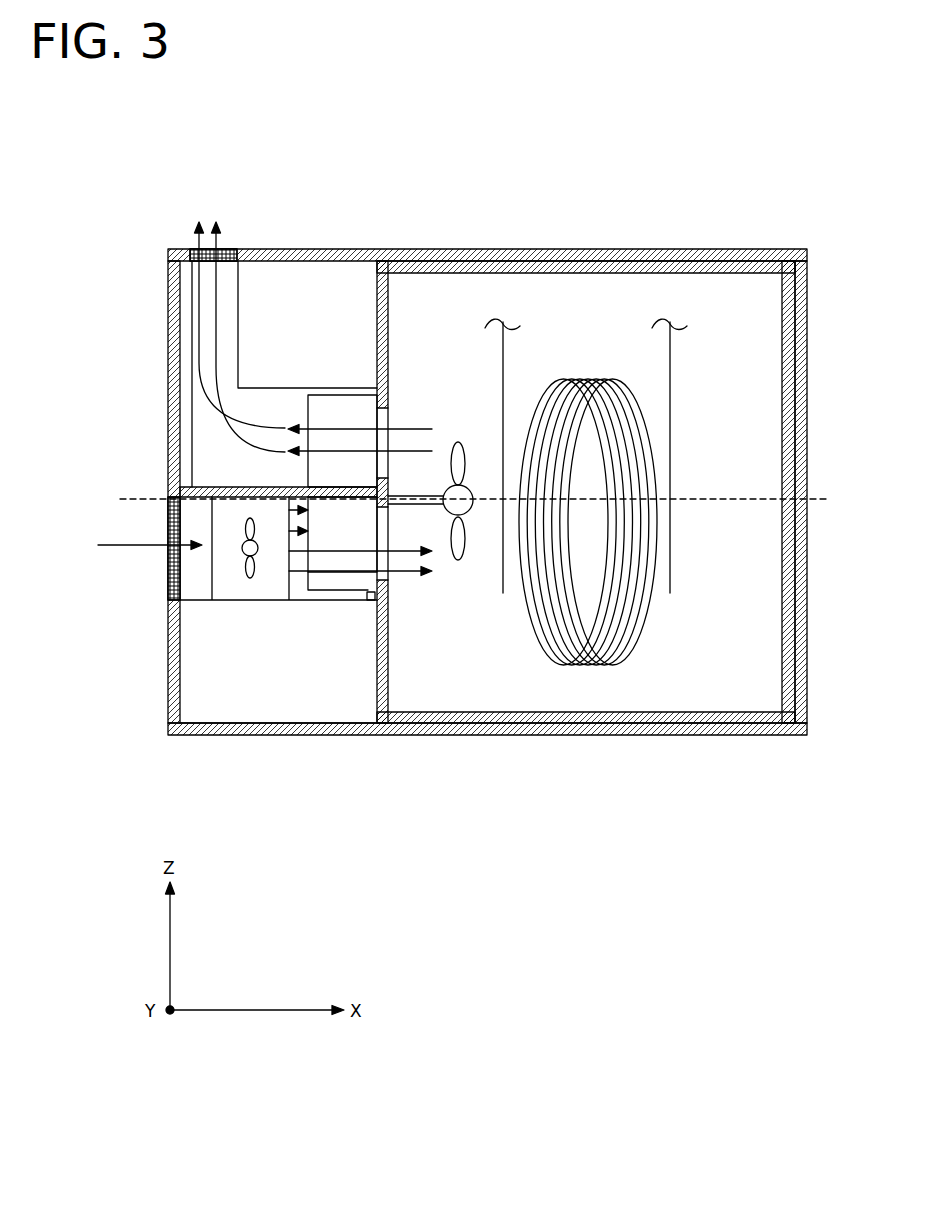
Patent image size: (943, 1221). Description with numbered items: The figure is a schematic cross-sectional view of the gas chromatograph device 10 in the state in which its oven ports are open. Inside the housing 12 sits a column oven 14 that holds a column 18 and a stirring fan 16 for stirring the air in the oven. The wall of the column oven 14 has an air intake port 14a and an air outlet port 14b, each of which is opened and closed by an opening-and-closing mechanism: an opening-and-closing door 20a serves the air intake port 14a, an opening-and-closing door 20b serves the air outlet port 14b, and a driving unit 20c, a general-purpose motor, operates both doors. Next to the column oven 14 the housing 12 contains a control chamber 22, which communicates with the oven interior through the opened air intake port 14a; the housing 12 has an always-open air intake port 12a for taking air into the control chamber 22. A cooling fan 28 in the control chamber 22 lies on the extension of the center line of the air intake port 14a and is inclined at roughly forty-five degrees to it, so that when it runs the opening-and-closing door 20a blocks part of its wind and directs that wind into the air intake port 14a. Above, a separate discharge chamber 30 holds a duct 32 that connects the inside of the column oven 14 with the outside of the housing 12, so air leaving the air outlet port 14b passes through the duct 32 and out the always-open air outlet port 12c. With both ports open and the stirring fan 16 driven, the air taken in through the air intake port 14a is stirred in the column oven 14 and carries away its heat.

The gas chromatograph device 10 is at (133, 155).
The housing 12 is at (524, 238).
The air intake port 12a is at (150, 532).
The air outlet port 12c is at (186, 231).
The column oven 14 is at (765, 252).
The air intake port 14a is at (402, 589).
The air outlet port 14b is at (404, 423).
The stirring fan 16 is at (477, 562).
The column 18 is at (692, 581).
The opening-and-closing door 20a is at (326, 591).
The opening-and-closing door 20b is at (340, 394).
The driving unit 20c is at (366, 601).
The control chamber 22 is at (272, 720).
The cooling fan 28 is at (250, 590).
The discharge chamber 30 is at (285, 268).
The duct 32 is at (238, 330).